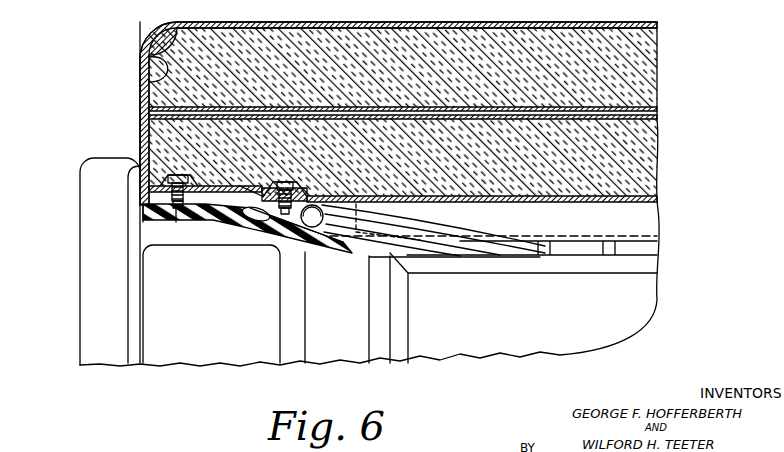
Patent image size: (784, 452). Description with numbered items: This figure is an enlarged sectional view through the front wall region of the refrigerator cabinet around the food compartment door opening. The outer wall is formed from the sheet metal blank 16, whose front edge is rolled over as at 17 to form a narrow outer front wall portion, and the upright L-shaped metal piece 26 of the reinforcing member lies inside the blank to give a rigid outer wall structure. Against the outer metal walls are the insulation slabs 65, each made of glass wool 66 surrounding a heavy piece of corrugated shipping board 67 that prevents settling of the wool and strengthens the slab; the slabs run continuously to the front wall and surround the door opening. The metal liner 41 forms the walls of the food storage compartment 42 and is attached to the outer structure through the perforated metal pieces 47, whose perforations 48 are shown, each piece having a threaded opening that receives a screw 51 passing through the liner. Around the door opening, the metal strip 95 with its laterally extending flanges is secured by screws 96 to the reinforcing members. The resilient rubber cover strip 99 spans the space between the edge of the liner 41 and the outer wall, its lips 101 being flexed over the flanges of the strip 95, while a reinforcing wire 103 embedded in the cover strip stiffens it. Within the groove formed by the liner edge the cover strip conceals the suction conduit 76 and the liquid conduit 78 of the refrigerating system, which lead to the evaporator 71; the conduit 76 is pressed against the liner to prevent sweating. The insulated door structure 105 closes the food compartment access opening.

The sheet metal blank 16 is at (253, 22).
The rolled front edge portion 17 is at (140, 100).
The upright L-shaped metal piece 26 is at (143, 53).
The metal liner 41 is at (617, 201).
The food storage compartment 42 is at (638, 226).
The metal piece 47 is at (240, 186).
The perforation 48 is at (212, 188).
The screw 51 is at (284, 225).
The insulation slab 65 is at (618, 50).
The glass wool 66 is at (643, 62).
The corrugated shipping board 67 is at (607, 107).
The evaporator 71 is at (493, 293).
The suction conduit 76 is at (442, 245).
The conduit 78 is at (365, 218).
The metal strip 95 is at (192, 225).
The screw 96 is at (162, 223).
The resilient cover strip 99 is at (267, 224).
The lip 101 is at (143, 206).
The reinforcing wire 103 is at (238, 220).
The insulated door structure 105 is at (178, 345).